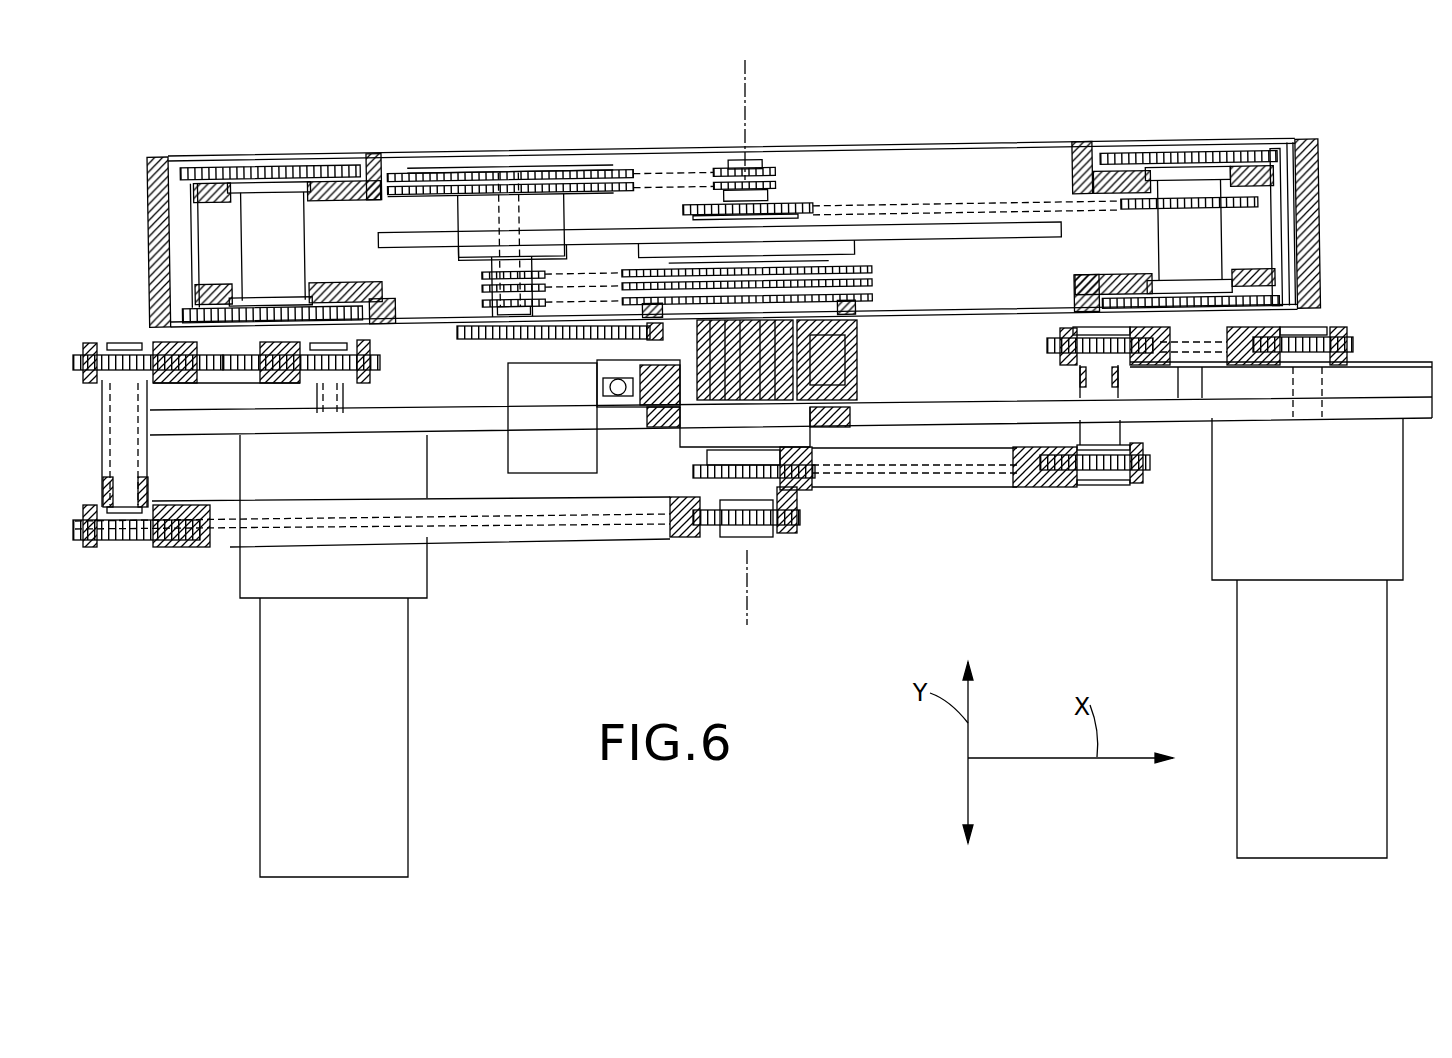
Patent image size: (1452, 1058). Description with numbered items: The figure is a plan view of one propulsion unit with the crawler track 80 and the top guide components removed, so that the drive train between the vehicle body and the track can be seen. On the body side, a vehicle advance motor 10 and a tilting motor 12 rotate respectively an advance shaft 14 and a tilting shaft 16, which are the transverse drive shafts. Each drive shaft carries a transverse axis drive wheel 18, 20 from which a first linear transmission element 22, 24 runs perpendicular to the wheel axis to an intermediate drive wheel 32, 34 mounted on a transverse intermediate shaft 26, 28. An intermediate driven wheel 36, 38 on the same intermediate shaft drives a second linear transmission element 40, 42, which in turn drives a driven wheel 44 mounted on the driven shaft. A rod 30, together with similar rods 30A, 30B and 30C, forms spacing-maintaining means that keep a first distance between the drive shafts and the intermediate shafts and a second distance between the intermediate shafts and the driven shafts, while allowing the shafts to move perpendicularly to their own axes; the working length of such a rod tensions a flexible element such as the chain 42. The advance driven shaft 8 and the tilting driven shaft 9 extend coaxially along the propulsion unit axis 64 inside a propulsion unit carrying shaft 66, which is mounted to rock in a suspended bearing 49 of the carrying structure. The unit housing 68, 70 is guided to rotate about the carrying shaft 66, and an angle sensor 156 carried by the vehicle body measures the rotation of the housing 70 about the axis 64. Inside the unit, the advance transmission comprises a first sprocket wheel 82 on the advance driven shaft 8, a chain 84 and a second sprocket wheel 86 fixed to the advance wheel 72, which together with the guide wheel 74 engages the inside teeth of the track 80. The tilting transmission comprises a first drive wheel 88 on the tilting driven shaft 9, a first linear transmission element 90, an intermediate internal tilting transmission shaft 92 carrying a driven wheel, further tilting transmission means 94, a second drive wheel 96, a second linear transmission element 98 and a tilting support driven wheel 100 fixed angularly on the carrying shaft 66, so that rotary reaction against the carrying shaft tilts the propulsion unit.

The advance driven shaft 8 is at (838, 346).
The tilting driven shaft 9 is at (747, 503).
The vehicle advance motor 10 is at (1267, 652).
The tilting motor 12 is at (255, 762).
The advance shaft 14 is at (347, 413).
The tilting shaft 16 is at (1323, 387).
The transverse axis drive wheel 18 is at (1353, 337).
The transverse axis drive wheel 20 is at (380, 367).
The first linear transmission element 22 is at (1220, 350).
The first linear transmission element 24 is at (223, 368).
The transverse intermediate shaft 26 is at (1090, 382).
The transverse intermediate shaft 28 is at (120, 500).
The rod 30 is at (460, 537).
The rod 30A is at (1200, 367).
The rod 30B is at (892, 487).
The rod 30C is at (257, 383).
The intermediate drive wheel 32 is at (1047, 345).
The intermediate drive wheel 34 is at (77, 353).
The intermediate driven wheel 36 is at (1153, 463).
The intermediate driven wheel 38 is at (127, 525).
The second linear transmission element 40 is at (957, 473).
The second linear transmission element 42 is at (520, 527).
The driven wheel 44 is at (800, 485).
The suspended bearing 49 is at (690, 400).
The propulsion unit axis 64 is at (748, 78).
The propulsion unit carrying shaft 66 is at (840, 392).
The unit housing 68 is at (463, 340).
The unit housing 70 is at (377, 244).
The advance wheel 72 is at (1122, 168).
The guide wheel 74 is at (333, 168).
The crawler track 80 is at (150, 227).
The first sprocket wheel 82 is at (802, 212).
The chain 84 is at (927, 212).
The second sprocket wheel 86 is at (1247, 207).
The first drive wheel 88 is at (718, 170).
The first linear transmission element 90 is at (673, 170).
The intermediate internal tilting transmission shaft 92 is at (496, 205).
The internal tilting transmission means 94 is at (622, 187).
The second drive wheel 96 is at (480, 290).
The second linear transmission element 98 is at (593, 270).
The tilting support driven wheel 100 is at (872, 268).
The angle sensor 156 is at (522, 443).